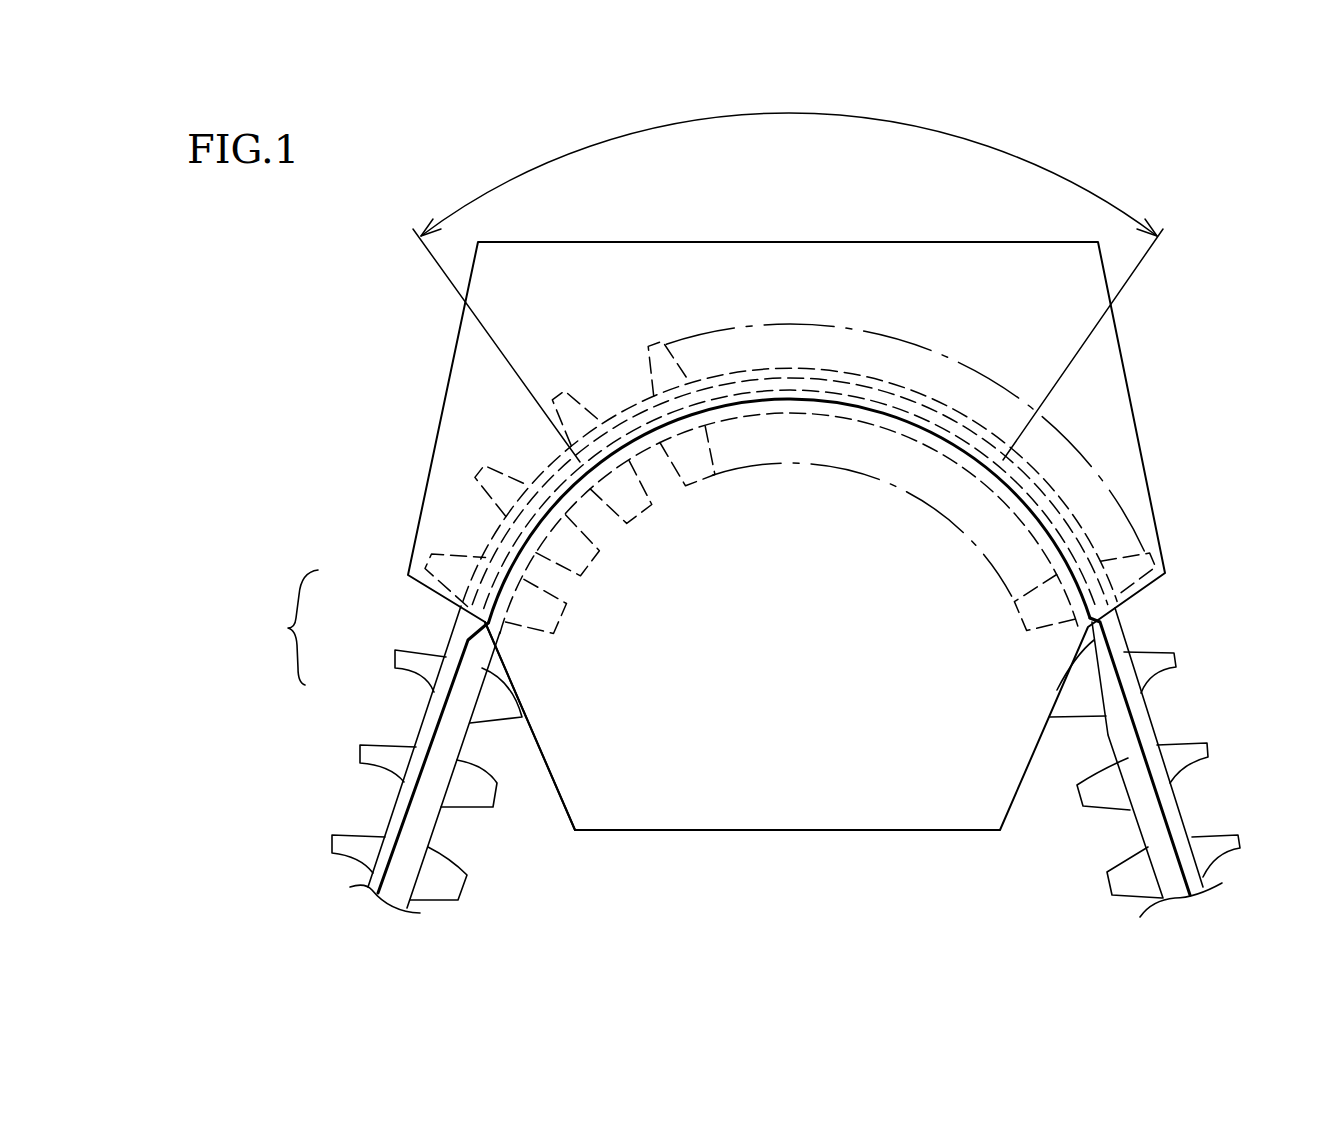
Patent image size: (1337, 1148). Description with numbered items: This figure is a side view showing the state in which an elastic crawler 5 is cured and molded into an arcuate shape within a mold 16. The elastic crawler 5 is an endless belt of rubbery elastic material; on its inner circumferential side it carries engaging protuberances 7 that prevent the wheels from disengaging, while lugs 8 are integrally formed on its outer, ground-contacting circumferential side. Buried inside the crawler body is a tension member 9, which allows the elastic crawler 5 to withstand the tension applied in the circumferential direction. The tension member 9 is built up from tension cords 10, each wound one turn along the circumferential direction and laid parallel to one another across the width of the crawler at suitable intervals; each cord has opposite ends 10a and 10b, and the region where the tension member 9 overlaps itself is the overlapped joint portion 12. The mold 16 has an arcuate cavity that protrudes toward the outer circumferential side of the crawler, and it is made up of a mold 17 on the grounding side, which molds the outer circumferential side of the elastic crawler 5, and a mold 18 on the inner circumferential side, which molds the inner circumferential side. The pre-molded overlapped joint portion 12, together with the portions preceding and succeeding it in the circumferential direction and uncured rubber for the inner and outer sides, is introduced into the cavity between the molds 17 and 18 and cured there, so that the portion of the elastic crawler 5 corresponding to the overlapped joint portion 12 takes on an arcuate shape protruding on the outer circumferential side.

The elastic crawler 5 is at (1160, 717).
The engaging protuberances 7 is at (490, 795).
The lugs 8 is at (1176, 655).
The tension member 9 is at (395, 803).
The tension cords 10 is at (779, 546).
The end of tension cord 10a is at (874, 398).
The end of tension cord 10b is at (868, 388).
The overlapped joint portion 12 is at (957, 135).
The mold 16 is at (287, 627).
The mold on the grounding side 17 is at (437, 508).
The mold on the inner circumferential side 18 is at (567, 752).